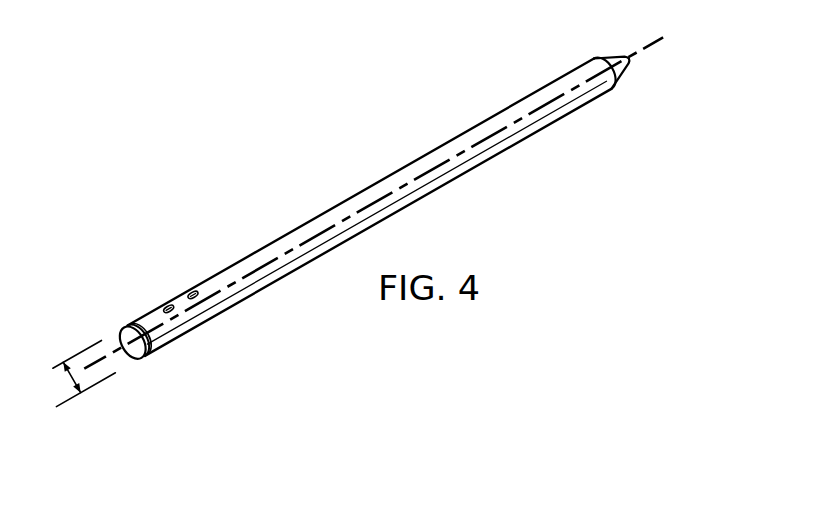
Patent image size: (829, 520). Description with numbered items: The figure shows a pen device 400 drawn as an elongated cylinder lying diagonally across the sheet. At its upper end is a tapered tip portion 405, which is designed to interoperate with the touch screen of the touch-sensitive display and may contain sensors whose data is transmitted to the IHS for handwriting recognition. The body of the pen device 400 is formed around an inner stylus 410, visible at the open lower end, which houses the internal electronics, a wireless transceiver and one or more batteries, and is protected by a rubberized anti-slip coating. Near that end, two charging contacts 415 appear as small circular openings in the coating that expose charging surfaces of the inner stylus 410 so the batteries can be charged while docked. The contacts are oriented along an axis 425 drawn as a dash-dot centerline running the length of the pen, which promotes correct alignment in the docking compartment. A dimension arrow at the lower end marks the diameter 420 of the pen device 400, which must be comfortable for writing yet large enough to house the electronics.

The pen device 400 is at (252, 143).
The tip portion 405 is at (618, 62).
The inner stylus 410 is at (126, 360).
The charging contacts 415 is at (193, 292).
The diameter 420 is at (71, 381).
The axis 425 is at (651, 46).